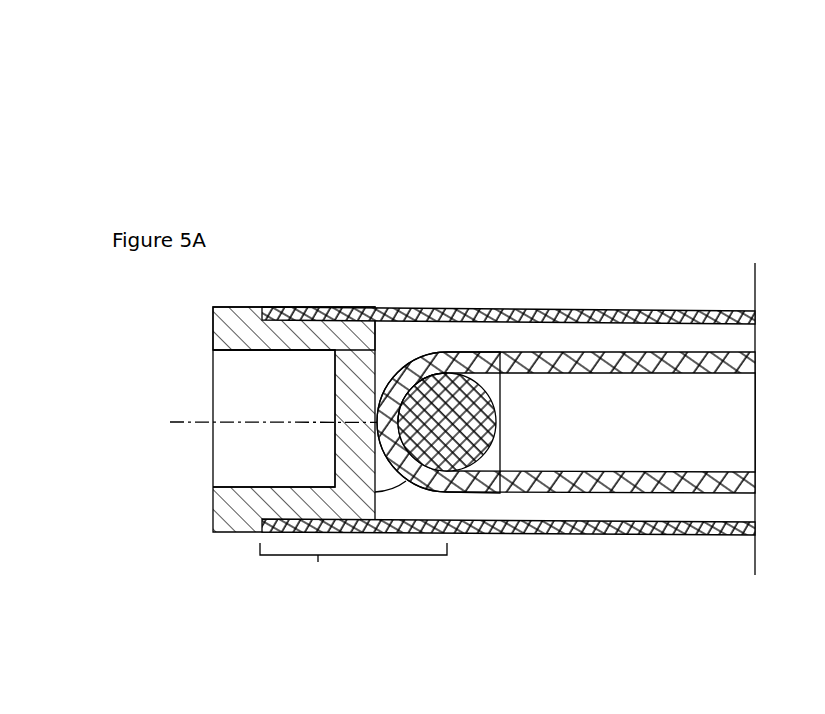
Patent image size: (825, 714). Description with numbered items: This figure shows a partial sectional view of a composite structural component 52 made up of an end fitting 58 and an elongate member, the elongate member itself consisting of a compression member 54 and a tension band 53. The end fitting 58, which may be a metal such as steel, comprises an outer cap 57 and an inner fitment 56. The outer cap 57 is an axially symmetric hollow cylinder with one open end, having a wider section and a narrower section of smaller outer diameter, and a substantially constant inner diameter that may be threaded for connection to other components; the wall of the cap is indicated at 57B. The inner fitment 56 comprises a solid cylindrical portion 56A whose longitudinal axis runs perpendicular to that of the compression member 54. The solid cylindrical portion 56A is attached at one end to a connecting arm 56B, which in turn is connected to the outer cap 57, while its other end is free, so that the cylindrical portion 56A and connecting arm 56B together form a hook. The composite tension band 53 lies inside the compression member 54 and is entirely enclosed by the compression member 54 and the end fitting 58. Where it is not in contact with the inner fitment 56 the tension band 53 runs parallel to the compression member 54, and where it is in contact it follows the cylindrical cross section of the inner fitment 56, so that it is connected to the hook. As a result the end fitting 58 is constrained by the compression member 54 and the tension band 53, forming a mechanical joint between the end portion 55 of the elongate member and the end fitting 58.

The composite structural component 52 is at (623, 132).
The tension band 53 is at (597, 365).
The compression member 54 is at (453, 318).
The end portion 55 is at (353, 574).
The inner fitment 56 is at (458, 500).
The solid cylindrical portion 56A is at (440, 383).
The connecting arm 56B is at (442, 374).
The outer cap 57 is at (220, 512).
The cap wall 57B is at (223, 330).
The end fitting 58 is at (195, 462).